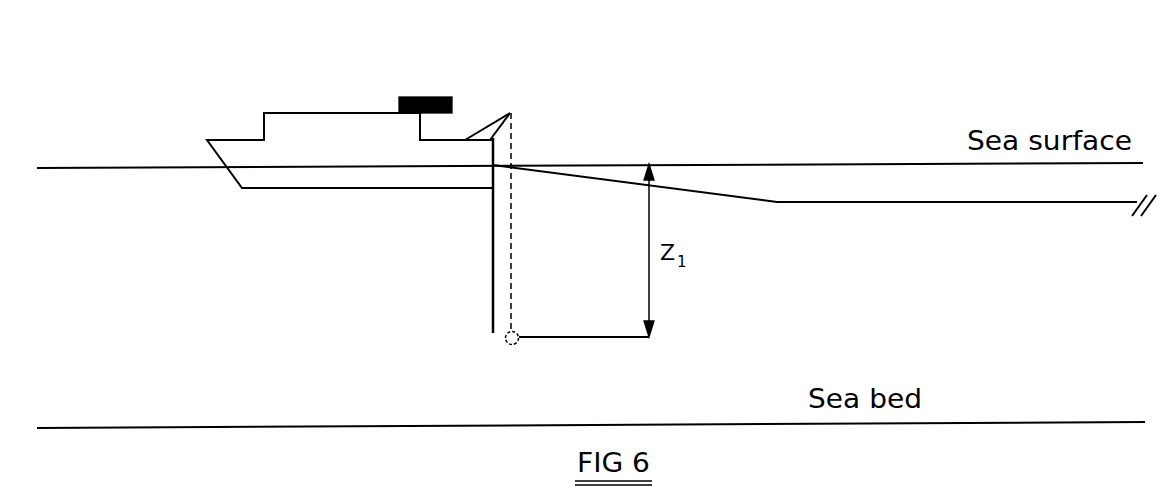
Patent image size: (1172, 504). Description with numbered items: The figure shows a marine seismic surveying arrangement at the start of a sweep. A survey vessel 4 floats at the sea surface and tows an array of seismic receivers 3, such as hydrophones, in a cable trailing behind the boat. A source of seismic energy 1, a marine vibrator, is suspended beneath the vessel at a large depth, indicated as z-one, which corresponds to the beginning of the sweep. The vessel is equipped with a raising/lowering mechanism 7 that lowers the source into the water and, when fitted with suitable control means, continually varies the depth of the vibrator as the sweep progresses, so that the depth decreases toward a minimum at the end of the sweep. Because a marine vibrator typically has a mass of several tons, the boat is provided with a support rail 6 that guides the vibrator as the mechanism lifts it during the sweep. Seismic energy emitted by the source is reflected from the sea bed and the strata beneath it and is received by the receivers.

The source of seismic energy 1 is at (519, 341).
The array of seismic receivers 3 is at (873, 263).
The survey vessel 4 is at (322, 104).
The support rail 6 is at (484, 241).
The raising/lowering mechanism 7 is at (510, 113).